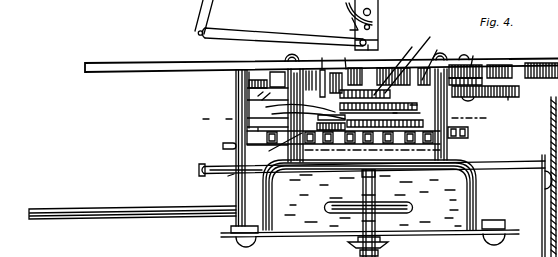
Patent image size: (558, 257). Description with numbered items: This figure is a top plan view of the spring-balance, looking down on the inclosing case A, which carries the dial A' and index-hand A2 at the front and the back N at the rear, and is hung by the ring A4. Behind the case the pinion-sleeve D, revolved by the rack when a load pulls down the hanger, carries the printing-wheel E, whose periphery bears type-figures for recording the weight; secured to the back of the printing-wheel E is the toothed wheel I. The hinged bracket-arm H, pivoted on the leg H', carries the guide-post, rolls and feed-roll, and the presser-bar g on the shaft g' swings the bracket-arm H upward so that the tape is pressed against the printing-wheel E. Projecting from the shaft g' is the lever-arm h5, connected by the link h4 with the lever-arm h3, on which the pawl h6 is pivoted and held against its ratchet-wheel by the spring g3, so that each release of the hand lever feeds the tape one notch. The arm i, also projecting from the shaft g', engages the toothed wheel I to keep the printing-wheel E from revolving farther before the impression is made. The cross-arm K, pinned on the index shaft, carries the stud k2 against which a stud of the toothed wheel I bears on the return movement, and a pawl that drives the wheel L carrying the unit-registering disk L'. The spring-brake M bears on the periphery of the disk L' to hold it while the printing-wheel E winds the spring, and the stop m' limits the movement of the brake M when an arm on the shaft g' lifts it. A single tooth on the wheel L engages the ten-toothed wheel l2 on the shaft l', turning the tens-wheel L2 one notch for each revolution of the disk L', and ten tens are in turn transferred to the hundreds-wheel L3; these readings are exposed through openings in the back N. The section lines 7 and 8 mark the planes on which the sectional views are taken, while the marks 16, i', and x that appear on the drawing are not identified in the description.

The link h4 is at (261, 31).
The lever-arm h3 is at (378, 38).
The pawl h6 is at (345, 7).
The spring g3 is at (345, 32).
The pin 16 is at (371, 53).
The stop m' is at (292, 75).
The stud k2 is at (304, 77).
The wheel L is at (408, 58).
The unit-registering disk L' is at (393, 68).
The cross-arm K is at (429, 61).
The shaft l' is at (473, 78).
The back N is at (556, 42).
The shaft g' is at (237, 151).
The shaft 8 is at (349, 119).
The spring-brake M is at (277, 79).
The leg H' is at (271, 97).
The pawl i' is at (304, 112).
The arm i is at (256, 136).
The toothed wheel I is at (332, 134).
The member x is at (325, 100).
The pinion-sleeve D is at (380, 149).
The printing-wheel E is at (468, 132).
The bracket-arm H is at (418, 106).
The tens-wheel L2 is at (512, 80).
The hundreds-wheel L3 is at (519, 90).
The wheel l2 is at (514, 105).
The rod 7 is at (227, 155).
The lever-arm h5 is at (223, 184).
The presser-bar g is at (132, 179).
The inclosing case A is at (384, 195).
The dial A' is at (370, 241).
The index-hand A2 is at (388, 246).
The ring A4 is at (412, 205).